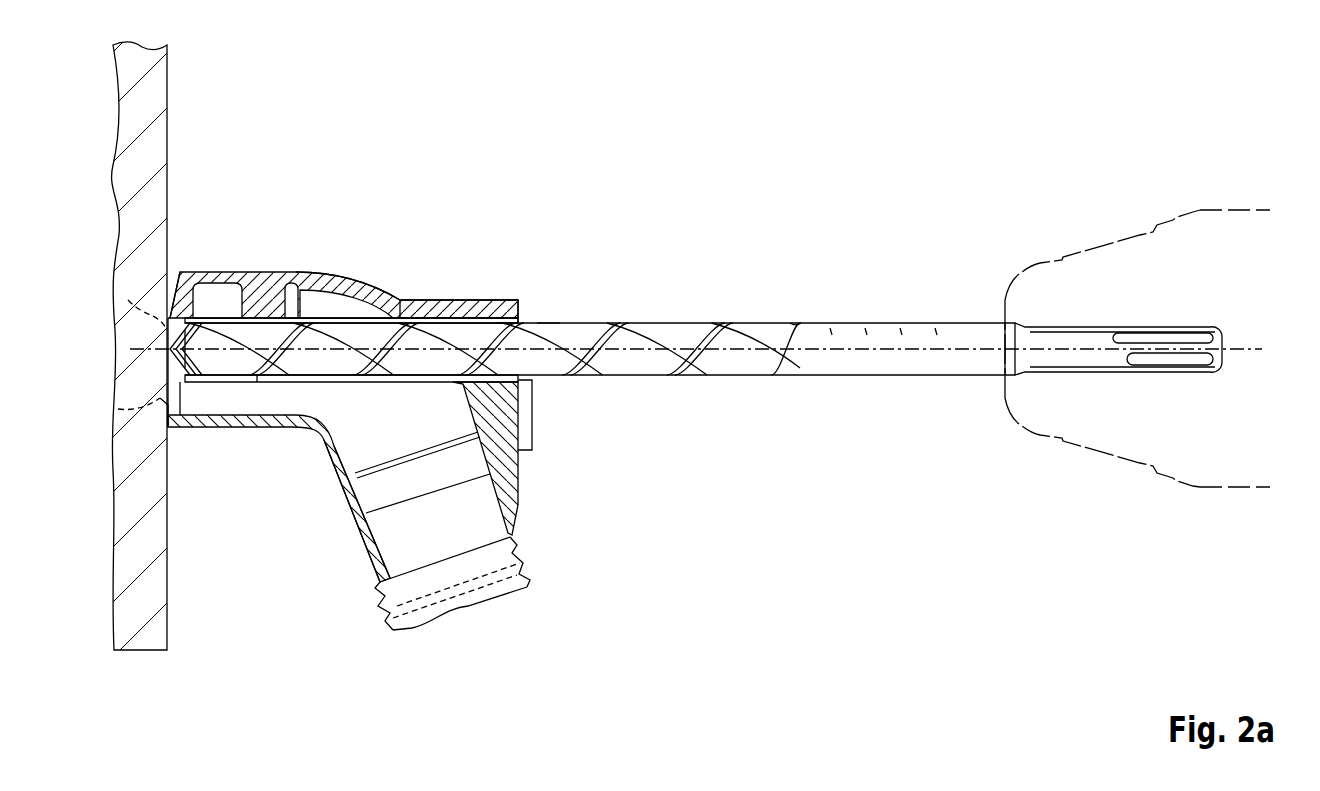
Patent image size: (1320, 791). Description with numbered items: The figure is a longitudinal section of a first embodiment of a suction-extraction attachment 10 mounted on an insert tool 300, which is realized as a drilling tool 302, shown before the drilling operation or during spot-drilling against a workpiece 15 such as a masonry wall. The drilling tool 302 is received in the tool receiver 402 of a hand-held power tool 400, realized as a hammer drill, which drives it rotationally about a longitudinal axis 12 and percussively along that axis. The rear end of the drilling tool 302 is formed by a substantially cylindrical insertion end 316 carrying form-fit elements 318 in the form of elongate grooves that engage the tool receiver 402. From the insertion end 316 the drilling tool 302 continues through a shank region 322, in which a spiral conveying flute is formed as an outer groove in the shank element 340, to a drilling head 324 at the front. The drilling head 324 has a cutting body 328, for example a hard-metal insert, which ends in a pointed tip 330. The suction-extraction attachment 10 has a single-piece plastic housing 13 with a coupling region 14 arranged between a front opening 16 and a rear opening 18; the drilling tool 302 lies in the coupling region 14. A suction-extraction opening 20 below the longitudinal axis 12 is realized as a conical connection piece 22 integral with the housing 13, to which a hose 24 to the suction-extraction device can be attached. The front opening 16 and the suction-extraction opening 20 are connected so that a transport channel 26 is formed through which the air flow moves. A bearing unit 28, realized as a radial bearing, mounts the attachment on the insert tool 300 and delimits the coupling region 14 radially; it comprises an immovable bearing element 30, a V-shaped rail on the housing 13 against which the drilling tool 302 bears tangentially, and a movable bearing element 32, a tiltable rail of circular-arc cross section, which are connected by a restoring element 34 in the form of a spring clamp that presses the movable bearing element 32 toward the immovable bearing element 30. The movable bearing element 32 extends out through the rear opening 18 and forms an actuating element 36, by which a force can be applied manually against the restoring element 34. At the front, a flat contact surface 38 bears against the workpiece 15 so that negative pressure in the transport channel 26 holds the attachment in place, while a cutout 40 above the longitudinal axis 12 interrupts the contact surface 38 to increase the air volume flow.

The suction-extraction attachment 10 is at (325, 225).
The longitudinal axis 12 is at (1248, 352).
The housing 13 is at (408, 300).
The coupling region 14 is at (440, 322).
The workpiece 15 is at (145, 58).
The front opening 16 is at (116, 409).
The rear opening 18 is at (538, 320).
The suction-extraction opening 20 is at (444, 542).
The connection piece 22 is at (372, 548).
The hose 24 is at (527, 570).
The transport channel 26 is at (353, 405).
The bearing unit 28 is at (260, 292).
The immovable bearing element 30 is at (298, 300).
The movable bearing element 32 is at (288, 383).
The restoring element 34 is at (338, 295).
The actuating element 36 is at (528, 437).
The contact surface 38 is at (162, 425).
The cutout 40 is at (178, 268).
The insert tool 300 is at (722, 225).
The drilling tool 302 is at (533, 294).
The insertion end 316 is at (1092, 295).
The form-fit elements 318 is at (1158, 335).
The shank region 322 is at (787, 305).
The drilling head 324 is at (163, 318).
The cutting body 328 is at (167, 333).
The pointed tip 330 is at (167, 349).
The shank element 340 is at (498, 318).
The hand-held power tool 400 is at (1137, 398).
The tool receiver 402 is at (1072, 456).